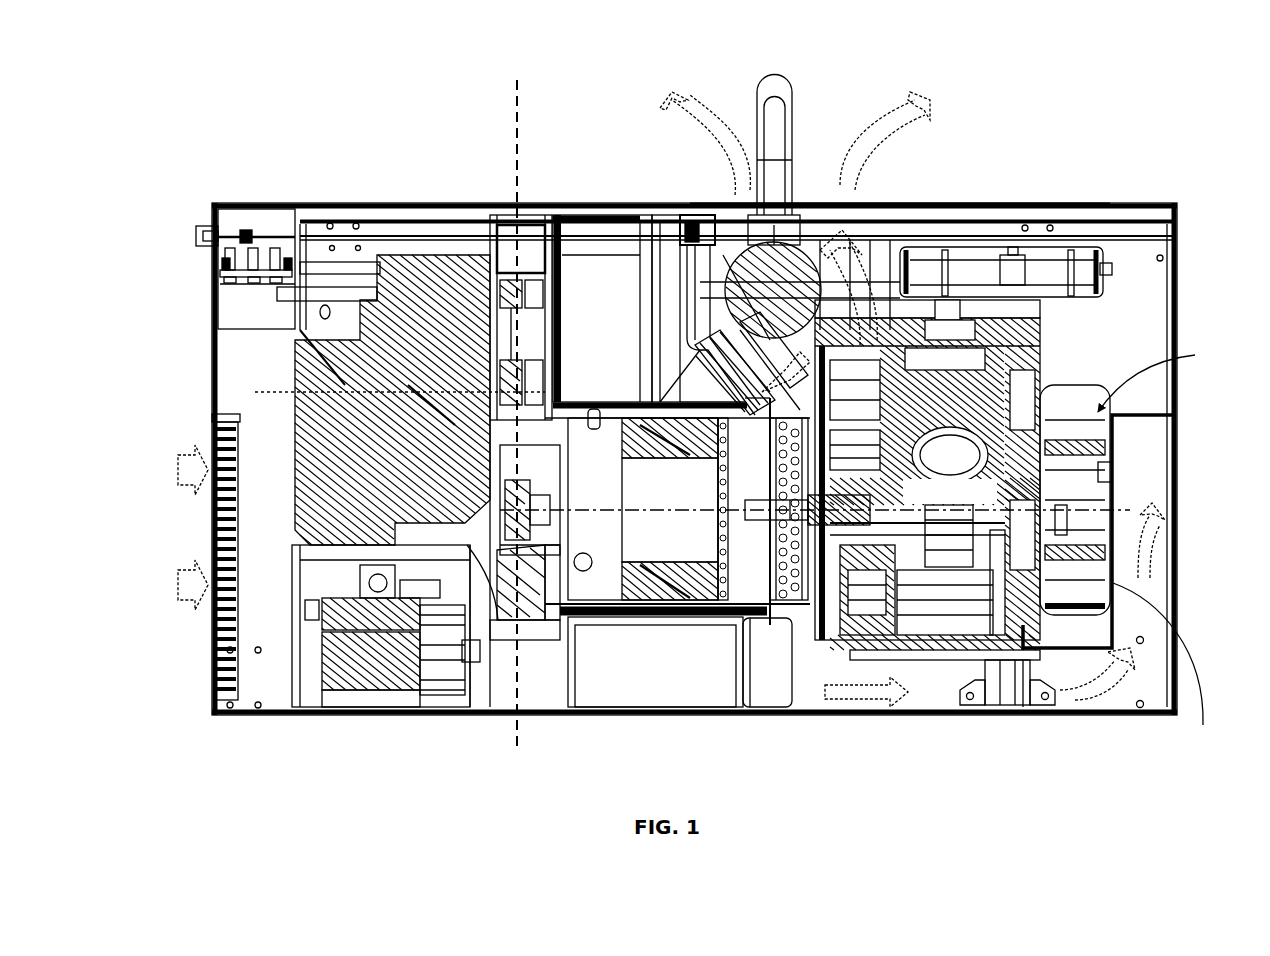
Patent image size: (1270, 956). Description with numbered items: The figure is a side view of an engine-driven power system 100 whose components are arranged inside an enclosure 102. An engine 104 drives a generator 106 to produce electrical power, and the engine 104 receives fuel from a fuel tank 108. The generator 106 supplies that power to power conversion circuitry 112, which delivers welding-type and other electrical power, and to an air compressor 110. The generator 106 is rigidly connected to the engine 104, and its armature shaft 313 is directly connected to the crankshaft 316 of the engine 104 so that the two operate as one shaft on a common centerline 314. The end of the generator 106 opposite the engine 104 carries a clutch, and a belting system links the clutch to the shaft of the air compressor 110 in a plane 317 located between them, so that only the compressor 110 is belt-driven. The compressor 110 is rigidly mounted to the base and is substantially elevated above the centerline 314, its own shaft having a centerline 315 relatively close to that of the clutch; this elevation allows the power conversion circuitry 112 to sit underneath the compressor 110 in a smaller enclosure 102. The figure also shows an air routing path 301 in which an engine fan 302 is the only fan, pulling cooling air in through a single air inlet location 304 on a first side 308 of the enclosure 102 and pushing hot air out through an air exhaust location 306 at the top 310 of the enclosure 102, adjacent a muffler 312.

The power system 100 is at (207, 90).
The enclosure 102 is at (378, 200).
The engine 104 is at (903, 593).
The generator 106 is at (637, 592).
The fuel tank 108 is at (703, 685).
The air compressor 110 is at (345, 370).
The power conversion circuitry 112 is at (405, 680).
The air routing path 301 is at (1096, 712).
The engine fan 302 is at (1114, 490).
The air inlet location 304 is at (213, 425).
The air exhaust location 306 is at (898, 95).
The first side 308 is at (205, 215).
The top 310 is at (252, 157).
The muffler 312 is at (880, 300).
The armature shaft 313 is at (540, 535).
The centerline 314 is at (667, 603).
The centerline 315 is at (273, 392).
The crankshaft 316 is at (773, 607).
The plane 317 is at (519, 160).